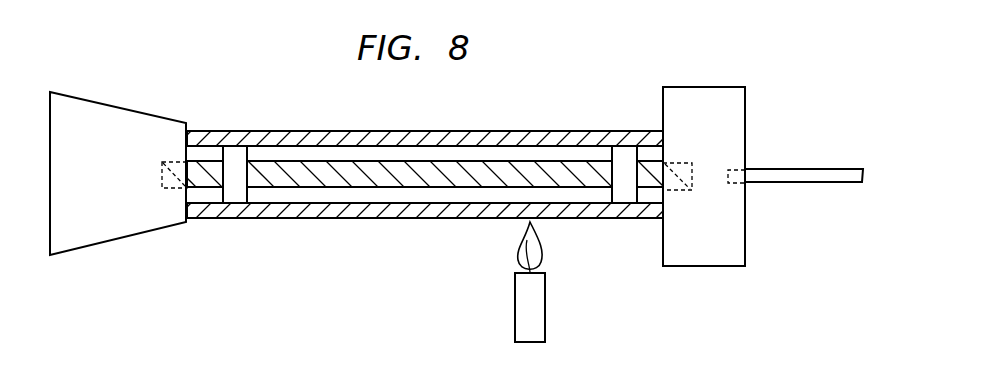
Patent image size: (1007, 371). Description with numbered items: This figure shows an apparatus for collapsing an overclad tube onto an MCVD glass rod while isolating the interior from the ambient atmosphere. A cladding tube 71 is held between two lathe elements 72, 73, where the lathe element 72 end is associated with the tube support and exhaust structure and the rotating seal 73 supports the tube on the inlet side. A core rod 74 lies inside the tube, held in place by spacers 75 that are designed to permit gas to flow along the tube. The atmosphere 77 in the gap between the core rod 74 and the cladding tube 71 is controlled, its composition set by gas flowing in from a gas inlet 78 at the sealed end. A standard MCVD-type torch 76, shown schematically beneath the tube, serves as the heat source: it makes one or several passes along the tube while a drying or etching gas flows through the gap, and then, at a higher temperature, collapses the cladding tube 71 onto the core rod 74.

The cladding tube 71 is at (278, 130).
The lathe element 72 is at (90, 99).
The rotating seal 73 is at (718, 87).
The core rod 74 is at (345, 190).
The spacers 75 is at (235, 198).
The torch 76 is at (515, 317).
The atmosphere 77 is at (515, 153).
The gas inlet 78 is at (805, 169).